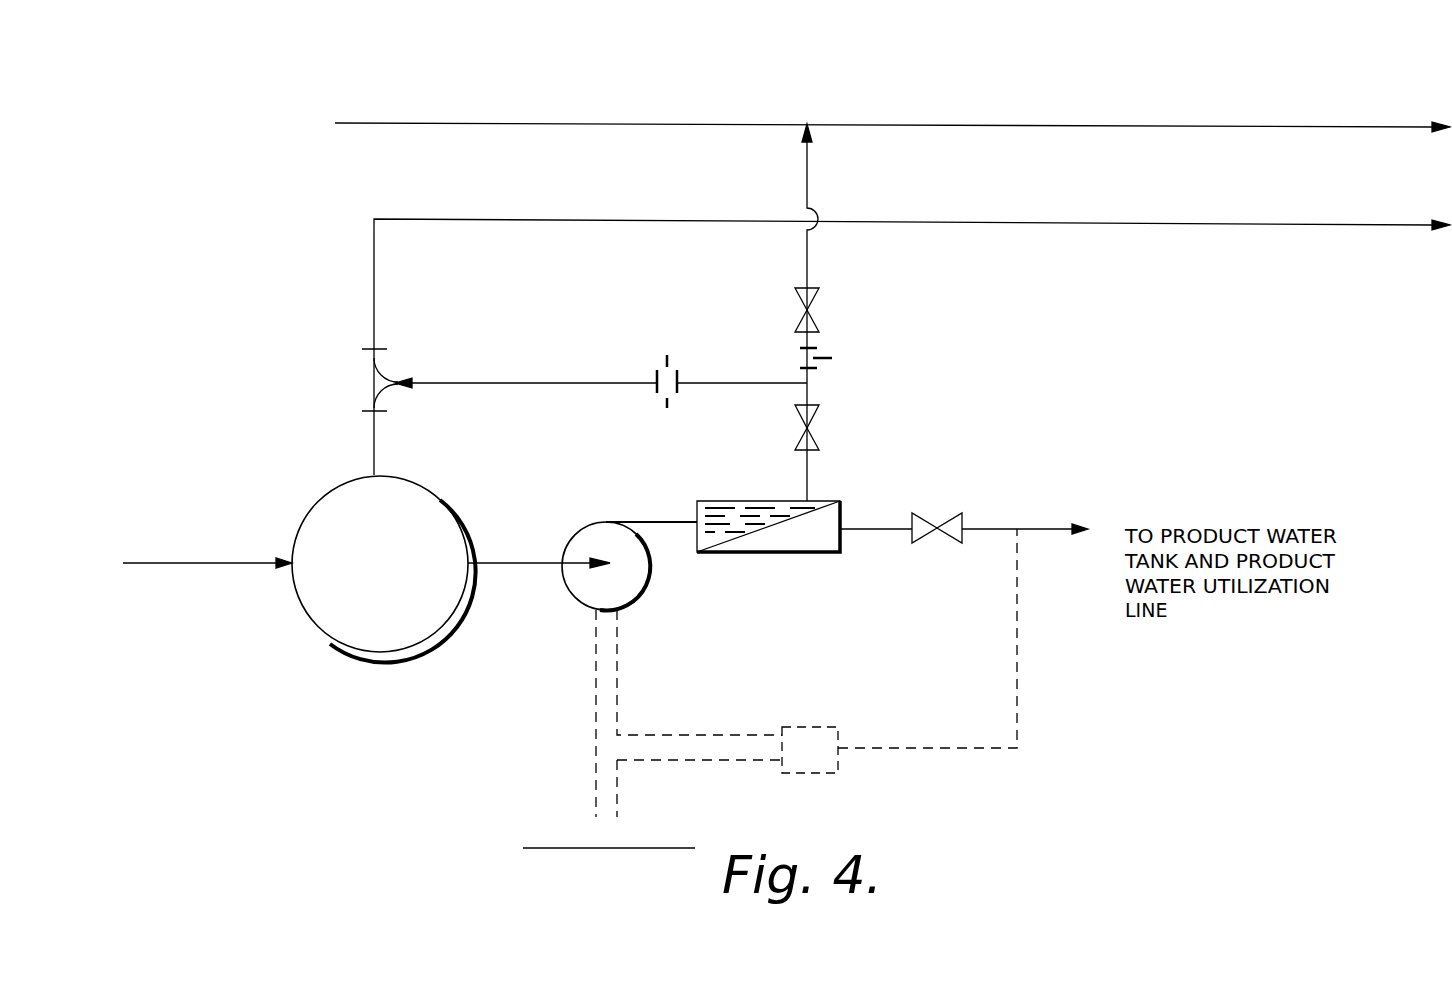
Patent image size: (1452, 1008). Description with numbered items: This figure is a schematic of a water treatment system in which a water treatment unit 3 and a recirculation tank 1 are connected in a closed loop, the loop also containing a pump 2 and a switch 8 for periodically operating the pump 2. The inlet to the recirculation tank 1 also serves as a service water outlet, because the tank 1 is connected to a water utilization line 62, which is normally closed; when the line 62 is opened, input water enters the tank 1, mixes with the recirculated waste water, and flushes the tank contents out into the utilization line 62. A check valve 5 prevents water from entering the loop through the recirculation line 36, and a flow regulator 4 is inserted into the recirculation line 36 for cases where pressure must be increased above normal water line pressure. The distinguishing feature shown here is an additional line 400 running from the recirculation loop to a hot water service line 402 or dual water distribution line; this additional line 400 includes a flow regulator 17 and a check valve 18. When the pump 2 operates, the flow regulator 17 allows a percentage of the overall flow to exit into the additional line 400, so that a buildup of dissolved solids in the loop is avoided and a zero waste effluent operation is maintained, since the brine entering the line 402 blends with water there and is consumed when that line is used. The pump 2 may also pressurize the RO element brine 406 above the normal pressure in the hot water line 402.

The recirculation tank 1 is at (452, 640).
The pump 2 is at (572, 612).
The water treatment unit 3 is at (693, 565).
The flow regulator 4 is at (652, 352).
The check valve 5 is at (828, 456).
The switch 8 is at (822, 715).
The flow regulator 17 is at (800, 358).
The check valve 18 is at (790, 312).
The recirculation line 36 is at (552, 383).
The water utilization line 62 is at (600, 219).
The additional line 400 is at (807, 257).
The hot water service line 402 is at (846, 123).
The RO element brine 406 is at (768, 501).